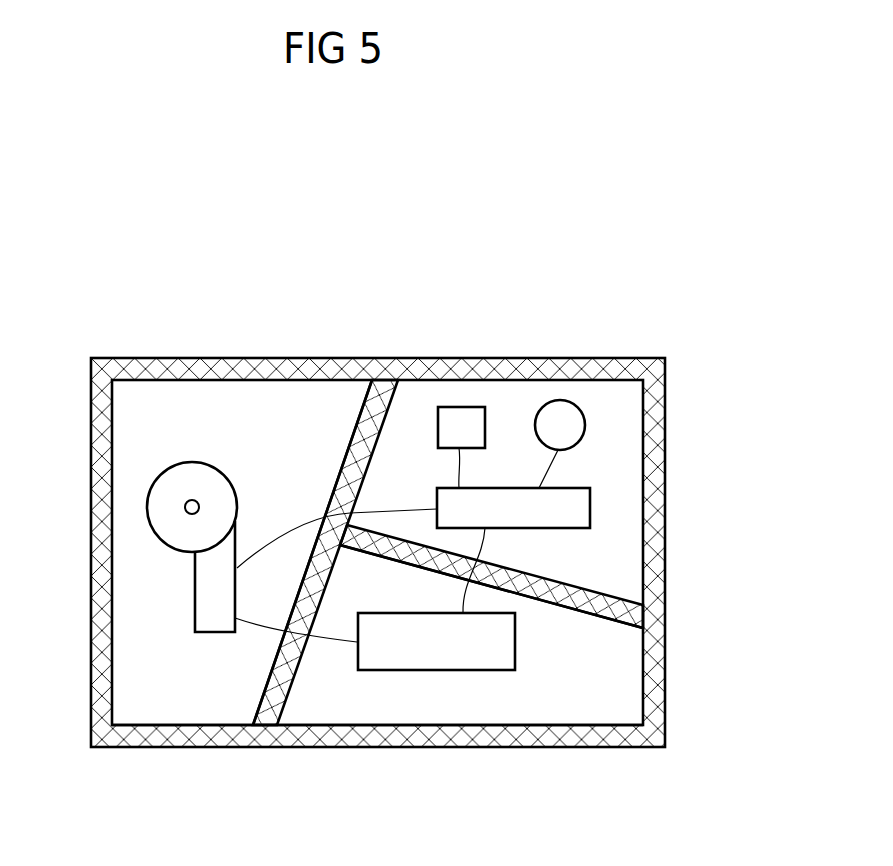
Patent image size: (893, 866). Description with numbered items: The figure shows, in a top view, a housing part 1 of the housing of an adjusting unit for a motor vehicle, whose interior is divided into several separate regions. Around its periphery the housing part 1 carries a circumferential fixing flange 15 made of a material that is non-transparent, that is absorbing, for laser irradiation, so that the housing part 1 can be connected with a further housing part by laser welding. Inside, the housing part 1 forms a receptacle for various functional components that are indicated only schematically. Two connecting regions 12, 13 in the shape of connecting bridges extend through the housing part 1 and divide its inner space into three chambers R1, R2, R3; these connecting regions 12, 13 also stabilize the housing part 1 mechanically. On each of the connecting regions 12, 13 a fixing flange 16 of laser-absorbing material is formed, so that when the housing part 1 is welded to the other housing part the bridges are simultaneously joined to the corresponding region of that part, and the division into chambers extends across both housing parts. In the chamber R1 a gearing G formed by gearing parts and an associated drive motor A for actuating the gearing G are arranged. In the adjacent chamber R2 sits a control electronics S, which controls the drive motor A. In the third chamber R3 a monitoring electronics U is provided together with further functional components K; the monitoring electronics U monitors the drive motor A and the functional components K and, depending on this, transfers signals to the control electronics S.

The housing part 1 is at (672, 489).
The connecting region 12 is at (373, 508).
The connecting region 13 is at (593, 588).
The circumferential fixing flange 15 is at (485, 733).
The fixing flange 16 is at (347, 456).
The gearing G is at (162, 519).
The drive motor A is at (207, 605).
The functional components K is at (470, 422).
The monitoring electronics U is at (578, 513).
The control electronics S is at (395, 650).
The chamber R1 is at (268, 435).
The chamber R2 is at (569, 688).
The chamber R3 is at (628, 473).